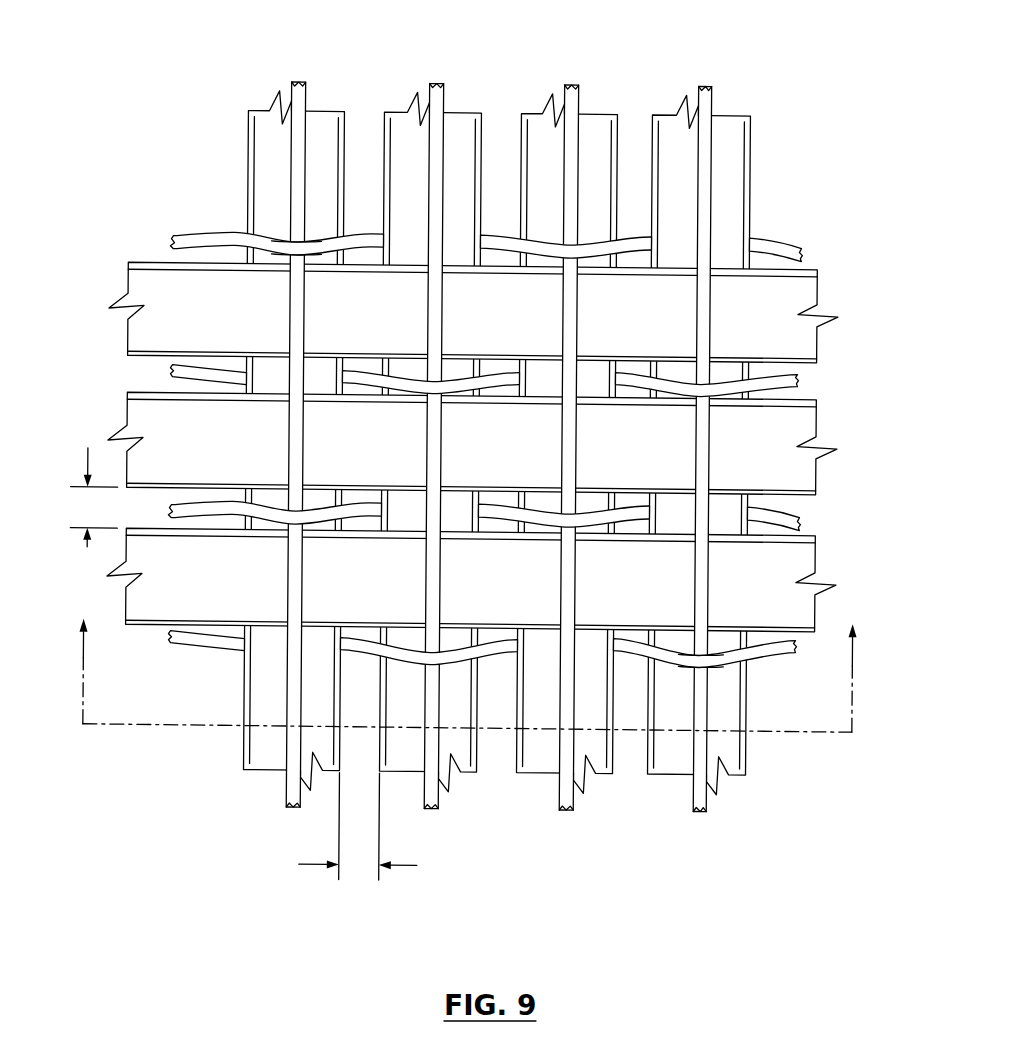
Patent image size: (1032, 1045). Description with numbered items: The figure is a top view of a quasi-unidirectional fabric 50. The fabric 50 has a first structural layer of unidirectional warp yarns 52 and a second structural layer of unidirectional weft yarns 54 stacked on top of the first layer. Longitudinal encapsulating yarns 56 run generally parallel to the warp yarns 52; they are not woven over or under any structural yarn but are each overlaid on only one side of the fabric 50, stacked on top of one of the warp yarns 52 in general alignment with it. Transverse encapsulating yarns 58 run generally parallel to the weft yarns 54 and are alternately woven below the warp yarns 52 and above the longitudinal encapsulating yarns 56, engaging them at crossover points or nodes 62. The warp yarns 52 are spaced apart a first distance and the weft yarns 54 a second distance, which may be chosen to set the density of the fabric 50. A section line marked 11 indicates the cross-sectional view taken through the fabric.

The fabric 50 is at (194, 81).
The unidirectional warp yarns 52 is at (738, 150).
The unidirectional weft yarns 54 is at (796, 284).
The longitudinal encapsulating yarns 56 is at (300, 90).
The transverse encapsulating yarns 58 is at (771, 244).
The crossover points or nodes 62 is at (290, 239).
The section line 11- 11 is at (471, 661).